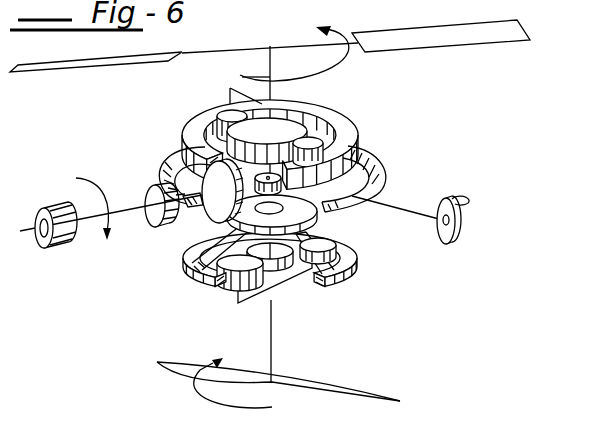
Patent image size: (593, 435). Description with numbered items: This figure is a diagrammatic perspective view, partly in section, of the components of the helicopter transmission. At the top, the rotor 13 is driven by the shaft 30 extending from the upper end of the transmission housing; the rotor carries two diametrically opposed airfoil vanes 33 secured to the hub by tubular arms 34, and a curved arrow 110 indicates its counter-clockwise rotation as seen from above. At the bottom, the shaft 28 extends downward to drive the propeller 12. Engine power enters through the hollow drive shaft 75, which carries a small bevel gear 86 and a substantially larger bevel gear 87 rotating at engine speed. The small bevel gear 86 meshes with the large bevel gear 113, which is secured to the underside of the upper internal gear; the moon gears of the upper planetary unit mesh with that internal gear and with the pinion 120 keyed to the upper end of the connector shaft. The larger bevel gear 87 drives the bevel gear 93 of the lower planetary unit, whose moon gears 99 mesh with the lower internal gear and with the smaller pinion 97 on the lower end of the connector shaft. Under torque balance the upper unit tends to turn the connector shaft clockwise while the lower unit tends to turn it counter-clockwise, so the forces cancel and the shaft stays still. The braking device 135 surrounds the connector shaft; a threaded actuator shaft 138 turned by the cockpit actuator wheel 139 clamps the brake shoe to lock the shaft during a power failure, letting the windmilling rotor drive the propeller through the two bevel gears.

The lower propeller 12 is at (168, 374).
The rotor 13 is at (234, 48).
The shaft 28 is at (273, 340).
The shaft 30 is at (275, 79).
The vanes 33 is at (52, 69).
The tubular arms 34 is at (235, 72).
The drive shaft 75 is at (127, 214).
The small bevel gear 86 is at (150, 189).
The second bevel gear 87 is at (227, 207).
The bevel gear 93 is at (320, 217).
The pinion gear 97 is at (276, 268).
The moon gear 99 is at (334, 246).
The rotation direction arrow 110 is at (296, 40).
The large bevel gear 113 is at (168, 158).
The pinion gear 120 is at (278, 130).
The braking device 135 is at (288, 182).
The threaded actuator shaft 138 is at (415, 211).
The actuator wheel 139 is at (458, 227).